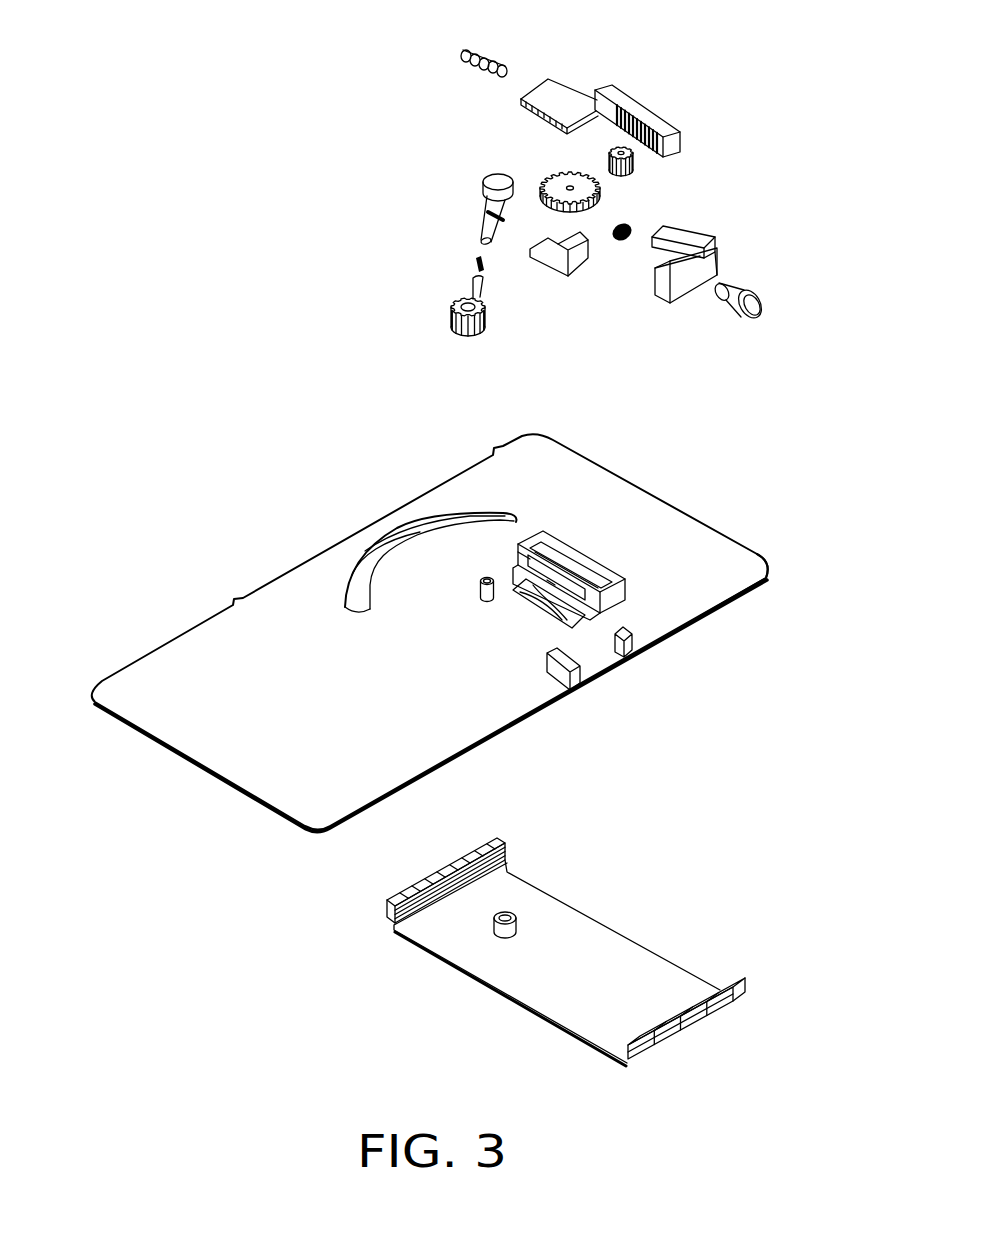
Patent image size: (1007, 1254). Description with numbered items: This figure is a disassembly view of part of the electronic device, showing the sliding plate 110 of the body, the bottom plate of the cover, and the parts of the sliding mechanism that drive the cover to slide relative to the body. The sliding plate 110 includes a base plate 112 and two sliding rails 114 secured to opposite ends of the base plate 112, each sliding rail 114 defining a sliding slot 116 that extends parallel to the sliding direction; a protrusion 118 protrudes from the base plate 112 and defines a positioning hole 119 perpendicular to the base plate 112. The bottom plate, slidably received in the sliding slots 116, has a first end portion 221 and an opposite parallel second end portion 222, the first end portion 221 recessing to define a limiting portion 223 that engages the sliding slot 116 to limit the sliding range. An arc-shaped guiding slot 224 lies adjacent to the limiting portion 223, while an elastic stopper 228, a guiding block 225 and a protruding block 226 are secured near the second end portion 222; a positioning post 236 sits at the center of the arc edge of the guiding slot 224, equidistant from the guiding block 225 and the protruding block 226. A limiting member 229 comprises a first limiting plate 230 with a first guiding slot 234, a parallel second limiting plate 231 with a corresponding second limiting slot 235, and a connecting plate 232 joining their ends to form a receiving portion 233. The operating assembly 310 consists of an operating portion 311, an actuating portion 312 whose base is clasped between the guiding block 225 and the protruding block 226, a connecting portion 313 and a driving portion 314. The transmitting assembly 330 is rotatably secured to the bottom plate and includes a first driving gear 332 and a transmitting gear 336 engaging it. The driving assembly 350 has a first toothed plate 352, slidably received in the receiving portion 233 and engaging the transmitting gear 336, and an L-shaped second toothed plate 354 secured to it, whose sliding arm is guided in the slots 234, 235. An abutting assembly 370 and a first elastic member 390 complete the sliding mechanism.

The sliding plate 110 is at (490, 964).
The base plate 112 is at (578, 1012).
The sliding rails 114 is at (685, 1027).
The sliding slot 116 is at (393, 918).
The protrusion 118 is at (520, 925).
The positioning hole 119 is at (507, 910).
The first end portion 221 is at (148, 652).
The second end portion 222 is at (740, 597).
The limiting portion 223 is at (452, 622).
The guiding slot 224 is at (362, 583).
The guiding block 225 is at (578, 673).
The protruding block 226 is at (634, 642).
The stopper 228 is at (533, 595).
The limiting member 229 is at (609, 516).
The first limiting plate 230 is at (610, 612).
The second limiting plate 231 is at (603, 567).
The connecting plate 232 is at (520, 542).
The receiving portion 233 is at (520, 545).
The first guiding slot 234 is at (519, 554).
The second limiting slot 235 is at (517, 569).
The positioning post 236 is at (485, 603).
The operating assembly 310 is at (652, 323).
The operating portion 311 is at (742, 326).
The actuating portion 312 is at (693, 278).
The connecting portion 313 is at (623, 245).
The driving portion 314 is at (570, 263).
The transmitting assembly 330 is at (610, 121).
The first driving gear 332 is at (604, 193).
The transmitting gear 336 is at (637, 163).
The driving assembly 350 is at (651, 93).
The first toothed plate 352 is at (672, 140).
The second toothed plate 354 is at (556, 100).
The abutting assembly 370 is at (446, 242).
The first elastic member 390 is at (485, 48).